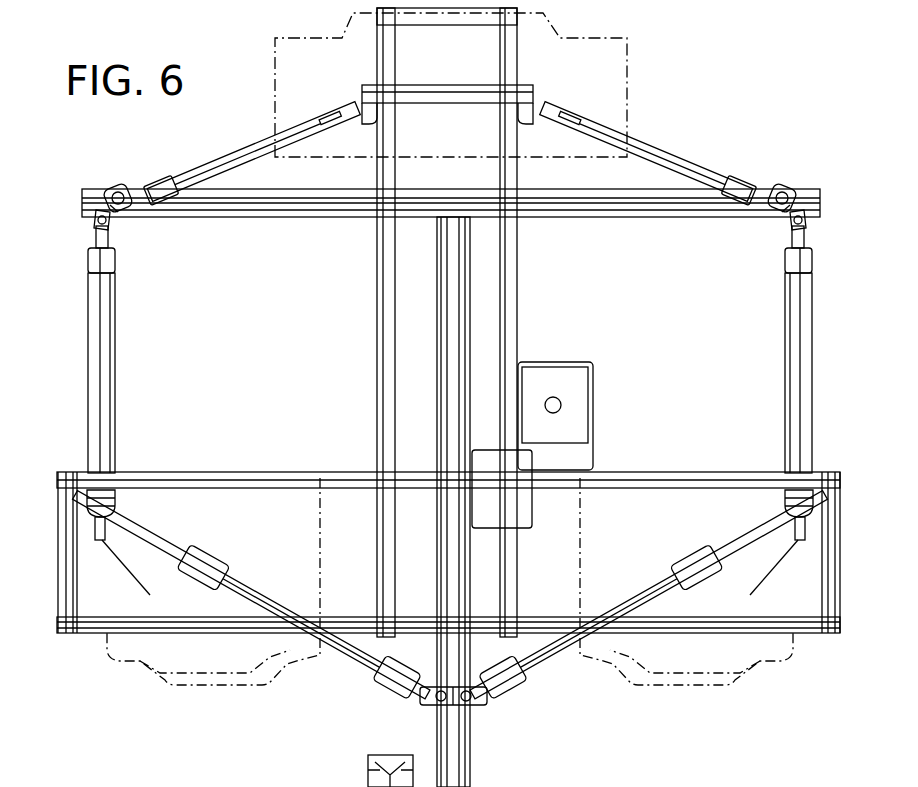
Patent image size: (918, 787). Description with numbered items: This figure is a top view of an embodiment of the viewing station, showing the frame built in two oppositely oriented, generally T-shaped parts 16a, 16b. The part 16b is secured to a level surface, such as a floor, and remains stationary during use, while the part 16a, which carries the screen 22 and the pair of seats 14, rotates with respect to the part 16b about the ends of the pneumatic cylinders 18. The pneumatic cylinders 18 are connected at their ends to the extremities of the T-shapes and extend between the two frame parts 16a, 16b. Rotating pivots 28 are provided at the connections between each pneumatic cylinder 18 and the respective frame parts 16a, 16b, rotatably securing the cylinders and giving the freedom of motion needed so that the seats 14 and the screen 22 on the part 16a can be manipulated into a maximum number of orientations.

The seats 14 is at (229, 686).
The part of the frame 16a is at (470, 752).
The part of the frame 16b is at (377, 386).
The pneumatic cylinders 18 is at (232, 158).
The screen 22 is at (300, 59).
The rotating pivots 28 is at (114, 190).